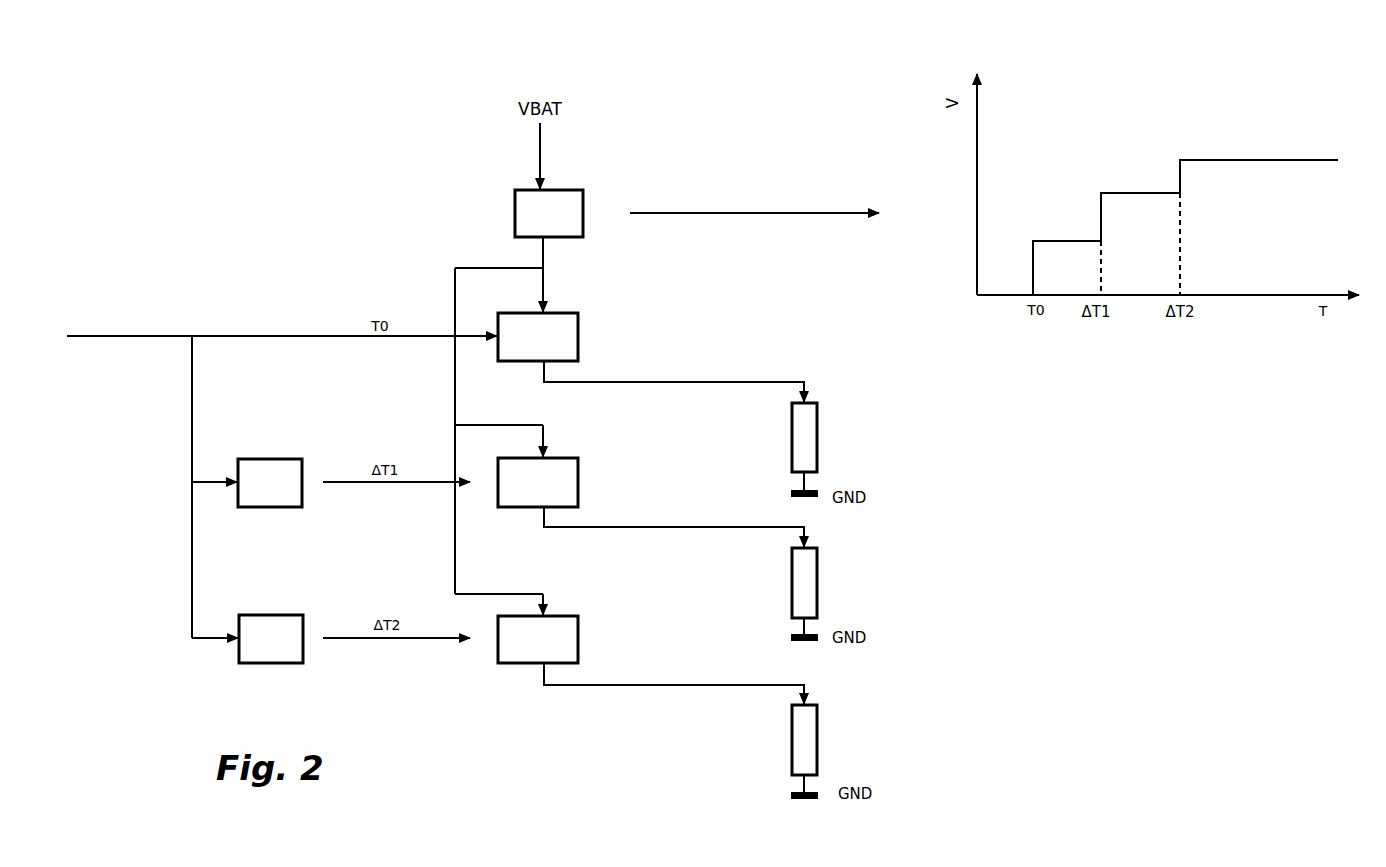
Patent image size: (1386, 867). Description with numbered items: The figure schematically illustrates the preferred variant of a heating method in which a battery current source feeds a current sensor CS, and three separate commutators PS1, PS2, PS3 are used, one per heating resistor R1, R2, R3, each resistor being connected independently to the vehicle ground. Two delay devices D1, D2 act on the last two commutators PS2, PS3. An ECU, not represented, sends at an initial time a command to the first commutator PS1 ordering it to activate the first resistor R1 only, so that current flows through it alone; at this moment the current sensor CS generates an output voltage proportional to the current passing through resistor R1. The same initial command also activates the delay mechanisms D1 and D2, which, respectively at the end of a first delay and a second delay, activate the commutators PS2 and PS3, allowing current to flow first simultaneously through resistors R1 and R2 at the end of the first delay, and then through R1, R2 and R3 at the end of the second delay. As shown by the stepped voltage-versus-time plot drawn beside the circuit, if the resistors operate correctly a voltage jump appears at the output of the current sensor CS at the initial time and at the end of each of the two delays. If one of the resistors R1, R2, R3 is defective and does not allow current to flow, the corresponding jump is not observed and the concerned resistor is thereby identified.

The current sensor CS is at (549, 213).
The first commutator PS1 is at (538, 337).
The second commutator PS2 is at (538, 482).
The third commutator PS3 is at (538, 639).
The first delay device D1 is at (270, 483).
The second delay device D2 is at (271, 639).
The first resistor R1 is at (821, 449).
The second resistor R2 is at (821, 594).
The third resistor R3 is at (821, 751).